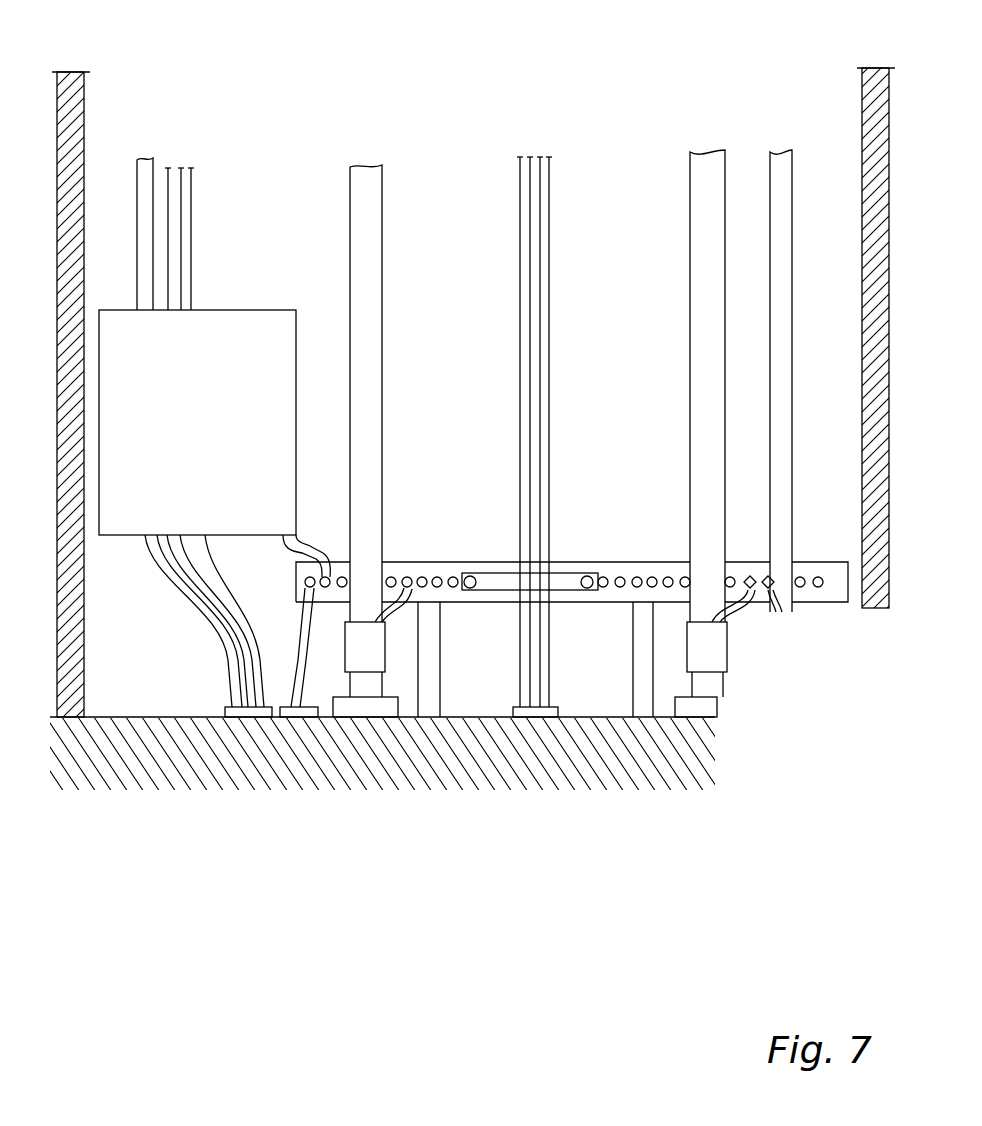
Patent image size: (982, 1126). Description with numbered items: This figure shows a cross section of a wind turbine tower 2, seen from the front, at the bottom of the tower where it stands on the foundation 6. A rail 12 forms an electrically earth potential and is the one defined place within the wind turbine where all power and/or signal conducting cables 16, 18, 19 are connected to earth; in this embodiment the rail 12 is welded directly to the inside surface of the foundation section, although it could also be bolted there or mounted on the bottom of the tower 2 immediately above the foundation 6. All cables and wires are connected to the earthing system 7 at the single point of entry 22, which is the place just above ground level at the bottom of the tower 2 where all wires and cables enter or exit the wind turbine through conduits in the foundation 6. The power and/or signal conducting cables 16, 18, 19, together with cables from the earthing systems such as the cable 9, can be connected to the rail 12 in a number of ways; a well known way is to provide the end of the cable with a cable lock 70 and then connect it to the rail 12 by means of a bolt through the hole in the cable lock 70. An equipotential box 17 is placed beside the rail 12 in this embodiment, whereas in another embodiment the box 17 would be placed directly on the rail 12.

The wind turbine tower 2 is at (64, 137).
The foundation 6 is at (268, 753).
The earthing system 7 is at (438, 215).
The earthing system cable 9 is at (298, 672).
The rail 12 is at (427, 577).
The power and/or signal conducting cable 16 is at (705, 309).
The equipotential box 17 is at (208, 372).
The power and/or signal conducting cable 18 is at (208, 615).
The power and/or signal conducting cable 19 is at (545, 636).
The single point of entry 22 is at (475, 705).
The cable lock 70 is at (717, 652).